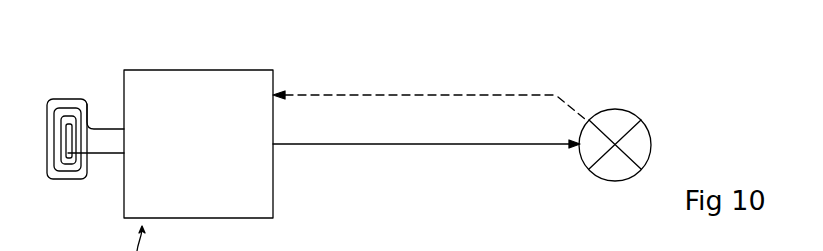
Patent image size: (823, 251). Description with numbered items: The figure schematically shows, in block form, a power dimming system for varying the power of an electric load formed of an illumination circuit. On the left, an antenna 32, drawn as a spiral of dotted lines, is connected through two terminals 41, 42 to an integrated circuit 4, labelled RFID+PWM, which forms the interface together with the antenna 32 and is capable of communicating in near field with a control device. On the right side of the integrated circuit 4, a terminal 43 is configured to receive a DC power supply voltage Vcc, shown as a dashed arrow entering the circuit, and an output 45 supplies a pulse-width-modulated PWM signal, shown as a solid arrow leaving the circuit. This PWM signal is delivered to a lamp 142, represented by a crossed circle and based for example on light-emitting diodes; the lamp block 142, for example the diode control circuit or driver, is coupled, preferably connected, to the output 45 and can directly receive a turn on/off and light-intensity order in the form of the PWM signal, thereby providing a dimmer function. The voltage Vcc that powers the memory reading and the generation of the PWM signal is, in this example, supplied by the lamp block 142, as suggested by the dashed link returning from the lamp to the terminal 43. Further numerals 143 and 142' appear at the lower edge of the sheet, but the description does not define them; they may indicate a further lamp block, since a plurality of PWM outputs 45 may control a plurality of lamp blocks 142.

The integrated circuit 4 is at (192, 70).
The antenna 32 is at (67, 106).
The terminal 41 is at (108, 128).
The terminal 42 is at (107, 156).
The terminal 43 is at (276, 93).
The output 45 is at (275, 147).
The lamp 142 is at (641, 114).
The light source driver 143 is at (406, 250).
The second light source 142' is at (727, 247).